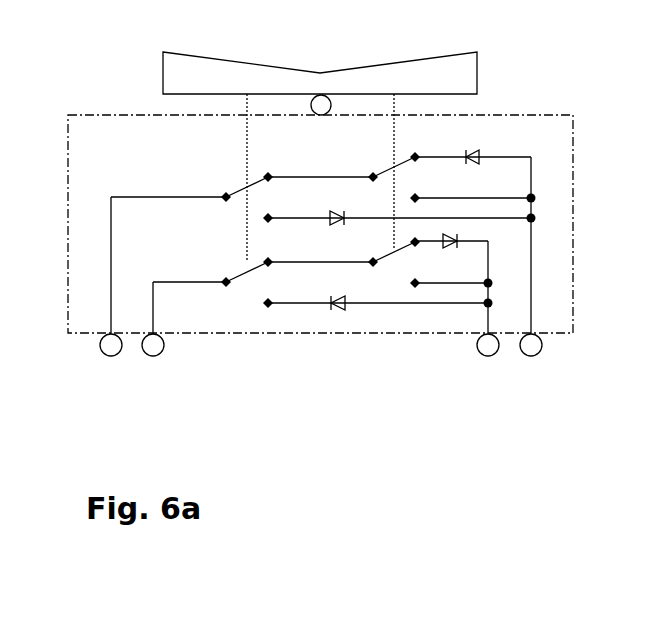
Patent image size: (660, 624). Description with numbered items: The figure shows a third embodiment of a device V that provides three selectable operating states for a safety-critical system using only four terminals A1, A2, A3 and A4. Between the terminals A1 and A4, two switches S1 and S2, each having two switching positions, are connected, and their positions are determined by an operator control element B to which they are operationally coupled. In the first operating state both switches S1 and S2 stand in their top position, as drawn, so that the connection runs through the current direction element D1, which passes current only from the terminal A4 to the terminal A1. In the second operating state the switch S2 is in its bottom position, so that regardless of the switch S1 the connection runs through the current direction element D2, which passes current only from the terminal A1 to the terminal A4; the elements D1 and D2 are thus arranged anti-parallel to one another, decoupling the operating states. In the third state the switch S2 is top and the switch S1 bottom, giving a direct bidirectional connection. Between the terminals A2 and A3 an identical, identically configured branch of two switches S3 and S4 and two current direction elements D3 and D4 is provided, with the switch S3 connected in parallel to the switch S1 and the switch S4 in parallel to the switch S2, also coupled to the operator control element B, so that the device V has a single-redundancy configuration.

The operator control element B is at (328, 83).
The device V is at (320, 224).
The switch S1 is at (385, 167).
The switch S2 is at (238, 187).
The switch S3 is at (385, 252).
The switch S4 is at (238, 272).
The current direction element D1 is at (473, 147).
The current direction element D2 is at (397, 208).
The current direction element D3 is at (451, 256).
The current direction element D4 is at (375, 293).
The terminal A1 is at (112, 362).
The terminal A2 is at (153, 362).
The terminal A3 is at (487, 362).
The terminal A4 is at (532, 362).